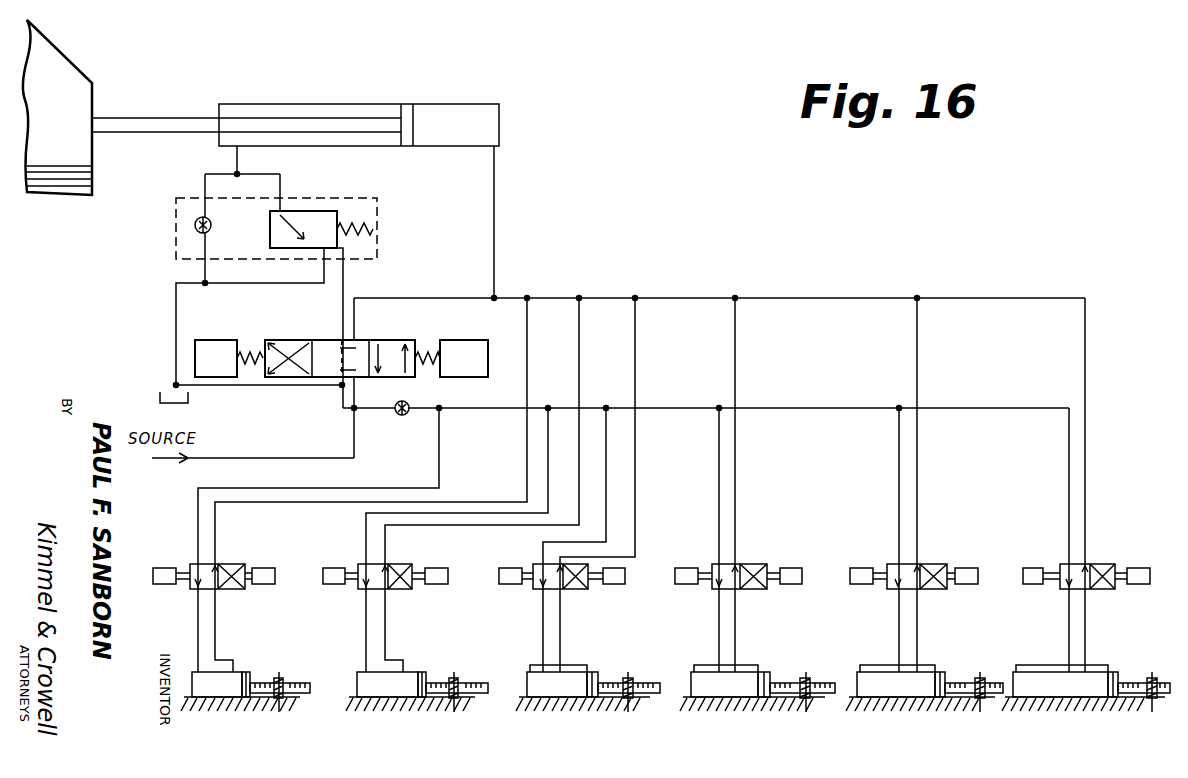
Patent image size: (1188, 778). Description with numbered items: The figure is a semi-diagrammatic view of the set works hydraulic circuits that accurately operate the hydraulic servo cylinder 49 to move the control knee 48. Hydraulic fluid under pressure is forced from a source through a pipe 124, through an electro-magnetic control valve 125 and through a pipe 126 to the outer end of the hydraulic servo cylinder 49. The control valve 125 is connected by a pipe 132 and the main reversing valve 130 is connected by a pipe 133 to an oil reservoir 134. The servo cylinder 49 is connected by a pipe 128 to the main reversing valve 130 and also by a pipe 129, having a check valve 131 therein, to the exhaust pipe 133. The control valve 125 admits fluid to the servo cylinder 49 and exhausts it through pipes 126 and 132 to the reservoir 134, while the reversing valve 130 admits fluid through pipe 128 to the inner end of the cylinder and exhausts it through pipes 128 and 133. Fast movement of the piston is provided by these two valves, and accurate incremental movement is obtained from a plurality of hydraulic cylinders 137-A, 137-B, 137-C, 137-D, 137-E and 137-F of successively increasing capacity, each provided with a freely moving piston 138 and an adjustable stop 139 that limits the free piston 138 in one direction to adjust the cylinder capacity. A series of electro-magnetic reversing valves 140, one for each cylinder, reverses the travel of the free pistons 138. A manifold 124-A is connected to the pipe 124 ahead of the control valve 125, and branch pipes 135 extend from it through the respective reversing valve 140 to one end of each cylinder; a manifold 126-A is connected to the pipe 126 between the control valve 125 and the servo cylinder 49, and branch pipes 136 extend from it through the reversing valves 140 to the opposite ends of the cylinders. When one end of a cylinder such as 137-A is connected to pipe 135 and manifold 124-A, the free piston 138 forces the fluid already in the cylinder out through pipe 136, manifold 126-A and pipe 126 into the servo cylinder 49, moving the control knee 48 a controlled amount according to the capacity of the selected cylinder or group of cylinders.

The control knee 48 is at (95, 56).
The hydraulic servo cylinder 49 is at (281, 108).
The pipe 124 is at (272, 458).
The manifold 124-A is at (710, 410).
The electro-magnetic control valve 125 is at (387, 343).
The pipe 126 is at (495, 241).
The manifold 126-A is at (710, 298).
The pipe 128 is at (281, 176).
The pipe 129 is at (205, 183).
The main reversing valve 130 is at (318, 219).
The check valve 131 is at (194, 226).
The pipe 132 is at (300, 386).
The pipe 133 is at (176, 347).
The oil reservoir 134 is at (160, 397).
The branch pipes 135 is at (1069, 447).
The branch pipes 136 is at (1086, 456).
The hydraulic cylinder 137-A is at (217, 672).
The hydraulic cylinder 137-B is at (405, 672).
The hydraulic cylinder 137-C is at (572, 672).
The hydraulic cylinder 137-D is at (737, 672).
The hydraulic cylinder 137-E is at (913, 672).
The hydraulic cylinder 137-F is at (1085, 672).
The free piston 138 is at (1091, 690).
The adjustable stop 139 is at (1118, 690).
The electro-magnetic reversing valve 140 is at (1090, 564).